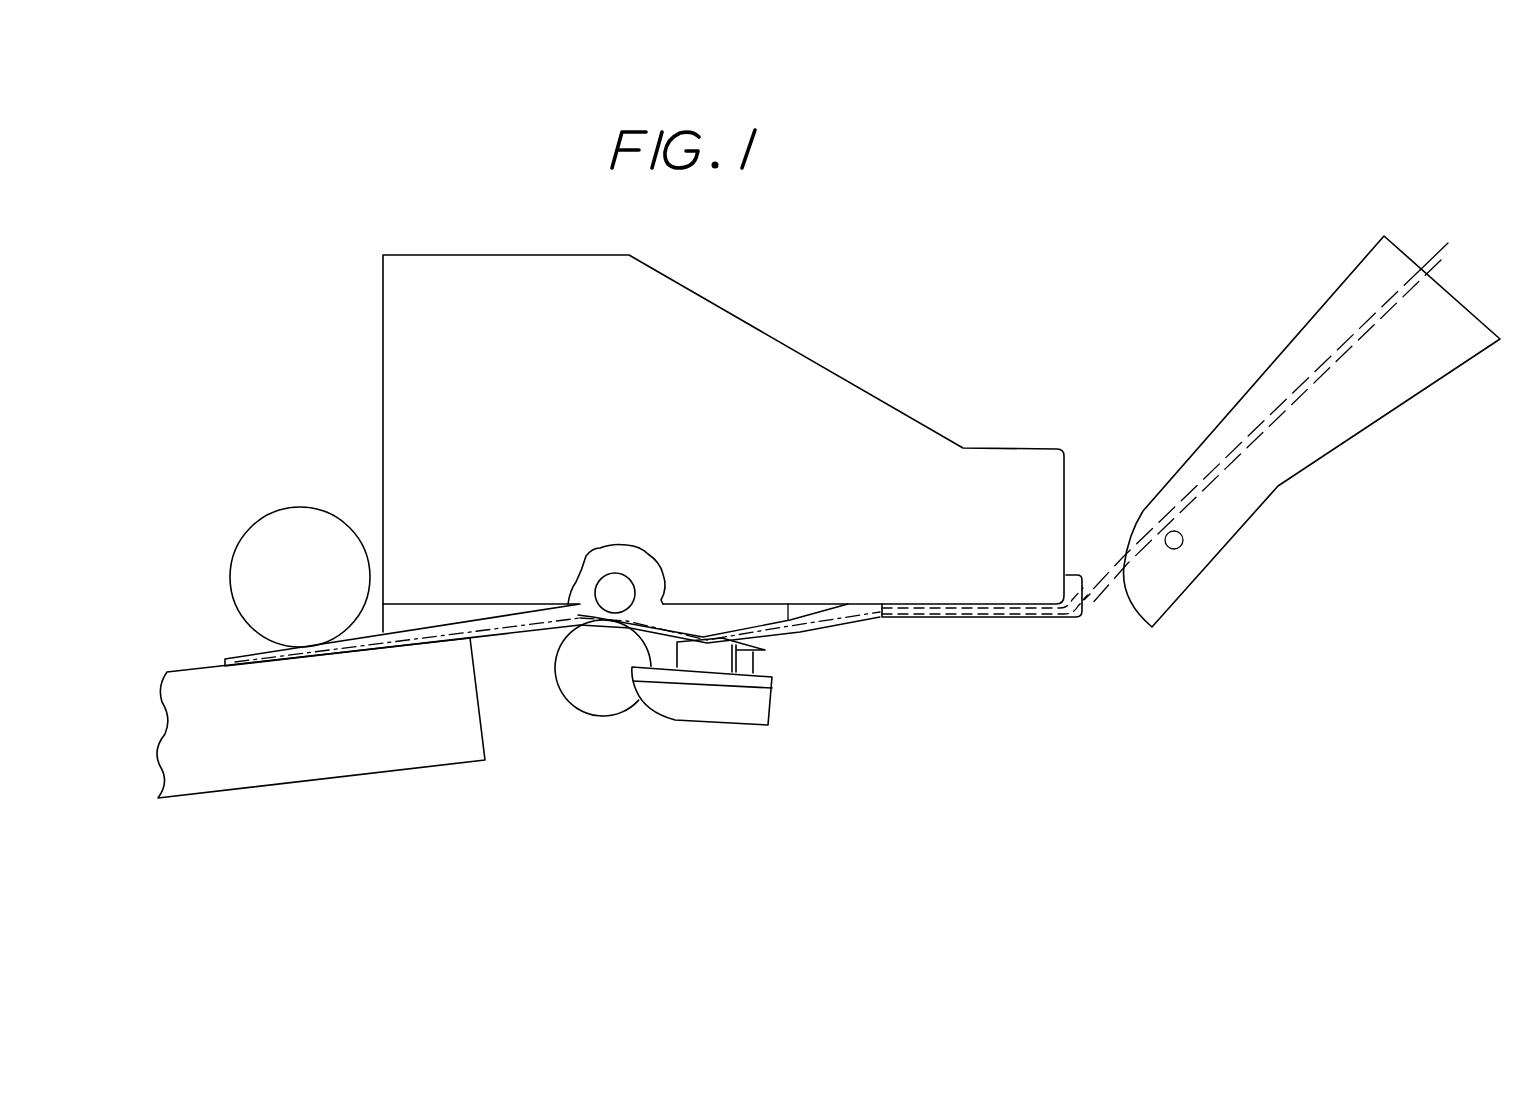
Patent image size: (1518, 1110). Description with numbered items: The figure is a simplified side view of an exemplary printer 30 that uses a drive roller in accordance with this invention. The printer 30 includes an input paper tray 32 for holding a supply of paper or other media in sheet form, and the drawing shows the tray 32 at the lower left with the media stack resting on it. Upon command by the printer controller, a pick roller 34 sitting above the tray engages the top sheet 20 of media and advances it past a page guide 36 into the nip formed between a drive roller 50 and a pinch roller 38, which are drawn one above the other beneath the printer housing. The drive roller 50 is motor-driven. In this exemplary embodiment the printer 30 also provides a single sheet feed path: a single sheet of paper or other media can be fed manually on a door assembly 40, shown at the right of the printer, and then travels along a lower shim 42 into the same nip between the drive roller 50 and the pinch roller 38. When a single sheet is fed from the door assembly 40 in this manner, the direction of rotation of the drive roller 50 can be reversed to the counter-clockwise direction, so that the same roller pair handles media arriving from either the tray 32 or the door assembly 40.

The top sheet 20 is at (252, 657).
The printer 30 is at (227, 410).
The tray 32 is at (252, 777).
The pick roller 34 is at (292, 506).
The page guide 36 is at (528, 610).
The pinch roller 38 is at (617, 581).
The door assembly 40 is at (1287, 348).
The lower shim 42 is at (987, 618).
The drive roller 50 is at (593, 698).